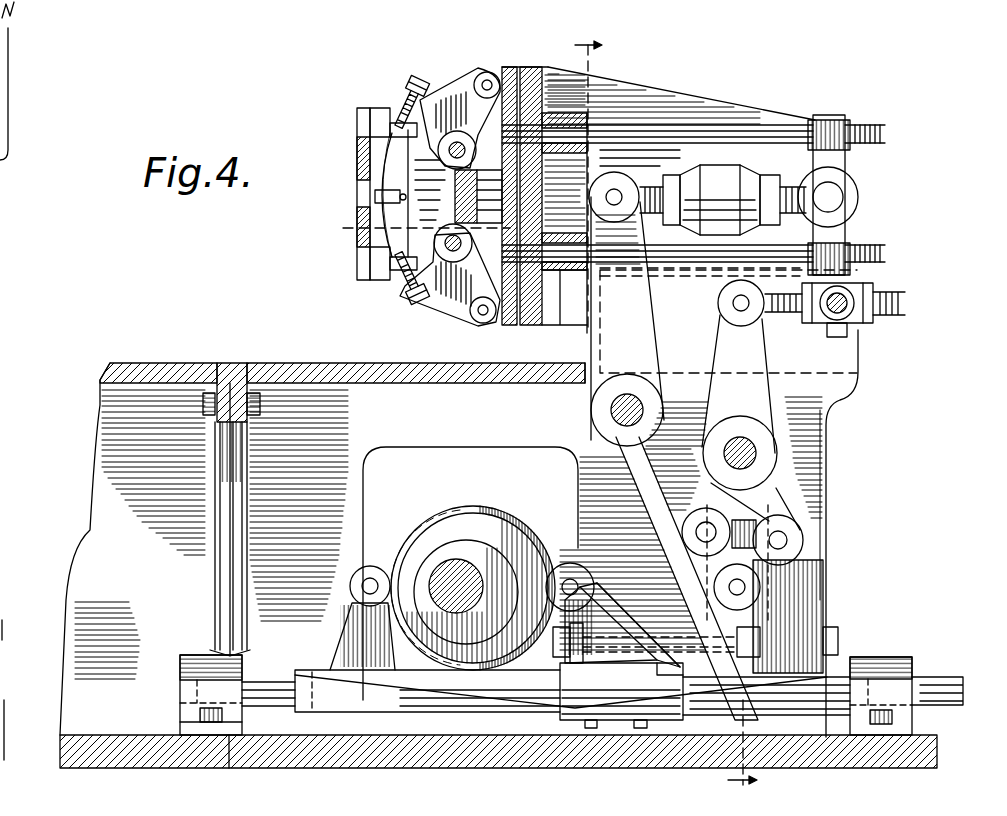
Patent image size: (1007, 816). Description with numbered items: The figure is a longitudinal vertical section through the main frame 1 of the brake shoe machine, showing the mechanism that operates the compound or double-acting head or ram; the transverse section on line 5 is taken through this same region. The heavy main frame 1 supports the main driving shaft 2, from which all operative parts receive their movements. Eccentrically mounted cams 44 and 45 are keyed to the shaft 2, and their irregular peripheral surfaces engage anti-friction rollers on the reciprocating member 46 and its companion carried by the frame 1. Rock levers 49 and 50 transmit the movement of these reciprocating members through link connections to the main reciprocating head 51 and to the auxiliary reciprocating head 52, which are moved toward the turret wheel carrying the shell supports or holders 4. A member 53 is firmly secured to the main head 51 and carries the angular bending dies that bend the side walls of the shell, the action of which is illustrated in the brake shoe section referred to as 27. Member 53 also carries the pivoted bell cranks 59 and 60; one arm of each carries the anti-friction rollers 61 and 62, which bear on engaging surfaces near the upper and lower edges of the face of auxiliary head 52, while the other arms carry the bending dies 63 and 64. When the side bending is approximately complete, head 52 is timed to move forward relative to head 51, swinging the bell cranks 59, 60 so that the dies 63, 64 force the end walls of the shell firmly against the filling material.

The main frame 1 is at (315, 390).
The main driving shaft 2 is at (437, 573).
The shell supports or holders 4 is at (357, 156).
The section line 5— 5 is at (666, 413).
The reference to Fig. 27 / brake shoe section 27 is at (346, 226).
The eccentrically mounted cam 44 is at (468, 525).
The eccentrically mounted cam 45 is at (527, 525).
The reciprocating member 46 is at (358, 693).
The rock lever 49 is at (673, 446).
The rock lever 50 is at (760, 412).
The main reciprocating head 51 is at (650, 100).
The auxiliary reciprocating head 52 is at (516, 72).
The member carrying bending dies 53 is at (402, 125).
The bell crank 59 is at (454, 133).
The bell crank 60 is at (450, 285).
The anti-friction roller 61 is at (482, 72).
The anti-friction roller 62 is at (512, 323).
The bending die 63 is at (428, 153).
The bending die 64 is at (403, 285).